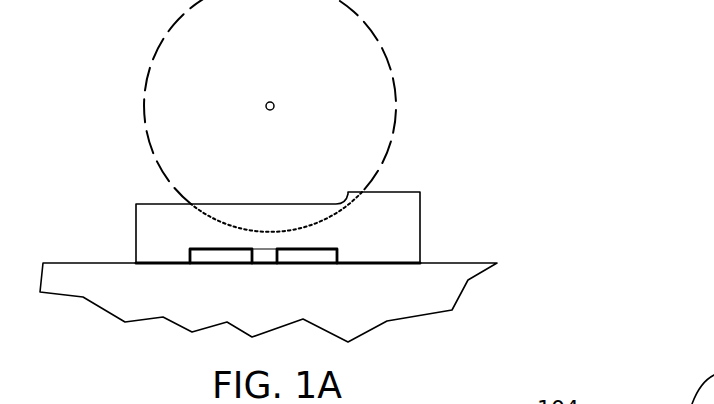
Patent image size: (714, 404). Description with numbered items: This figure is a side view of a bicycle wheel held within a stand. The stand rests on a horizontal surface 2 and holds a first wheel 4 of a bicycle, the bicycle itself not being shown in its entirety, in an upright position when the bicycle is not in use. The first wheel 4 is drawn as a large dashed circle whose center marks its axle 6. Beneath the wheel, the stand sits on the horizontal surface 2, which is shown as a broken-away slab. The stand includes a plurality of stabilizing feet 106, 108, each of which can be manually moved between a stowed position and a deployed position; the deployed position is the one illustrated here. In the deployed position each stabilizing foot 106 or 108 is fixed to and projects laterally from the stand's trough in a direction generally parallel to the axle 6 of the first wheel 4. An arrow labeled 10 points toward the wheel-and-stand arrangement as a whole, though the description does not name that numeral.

The horizontal surface 2 is at (453, 272).
The first wheel 4 is at (393, 72).
The axle 6 is at (273, 102).
The assembly 10 is at (440, 151).
The stabilizing foot 106 is at (232, 256).
The stabilizing foot 108 is at (307, 256).